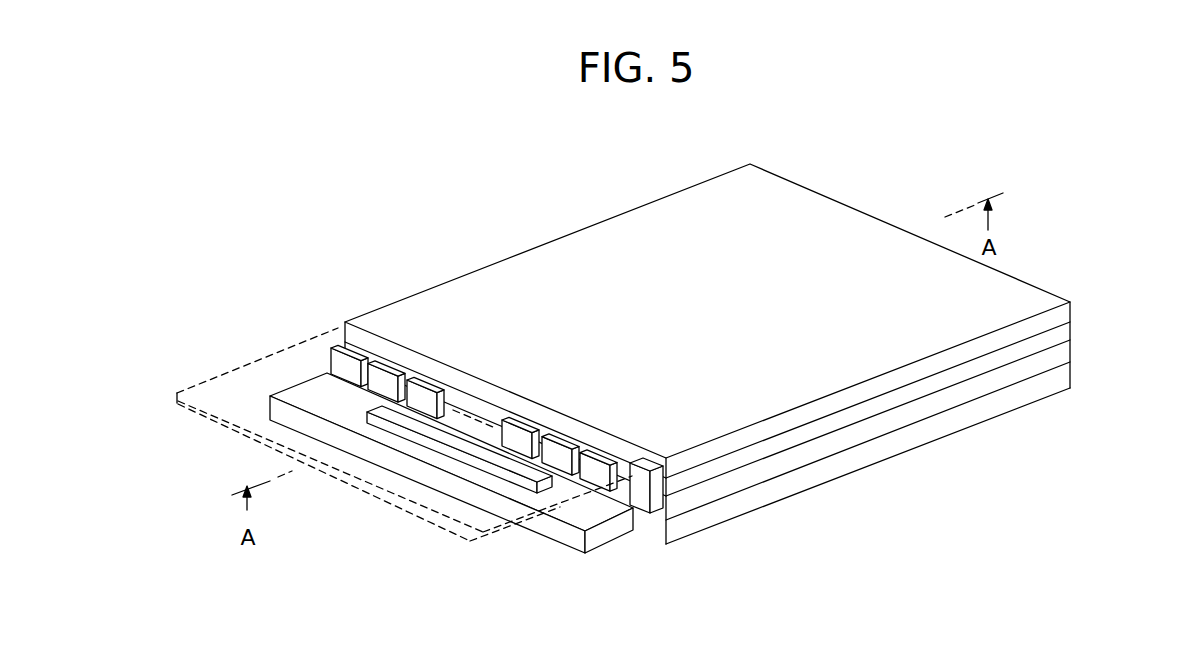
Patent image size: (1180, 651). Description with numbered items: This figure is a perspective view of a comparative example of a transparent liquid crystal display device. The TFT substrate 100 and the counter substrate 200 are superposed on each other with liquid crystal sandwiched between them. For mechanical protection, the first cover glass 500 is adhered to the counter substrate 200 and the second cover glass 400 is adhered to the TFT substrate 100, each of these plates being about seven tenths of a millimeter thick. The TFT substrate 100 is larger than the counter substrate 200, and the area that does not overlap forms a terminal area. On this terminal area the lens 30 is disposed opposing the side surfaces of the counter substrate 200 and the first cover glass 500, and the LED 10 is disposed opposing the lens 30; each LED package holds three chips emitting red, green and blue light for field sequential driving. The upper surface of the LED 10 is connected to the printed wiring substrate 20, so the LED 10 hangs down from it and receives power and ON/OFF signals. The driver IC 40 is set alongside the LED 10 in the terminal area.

The LED 10 is at (337, 362).
The printed wiring substrate 20 is at (246, 364).
The lens 30 is at (378, 351).
The driver IC 40 is at (423, 450).
The TFT substrate 100 is at (1074, 355).
The counter substrate 200 is at (1075, 336).
The second cover glass 400 is at (1073, 378).
The first cover glass 500 is at (1075, 311).